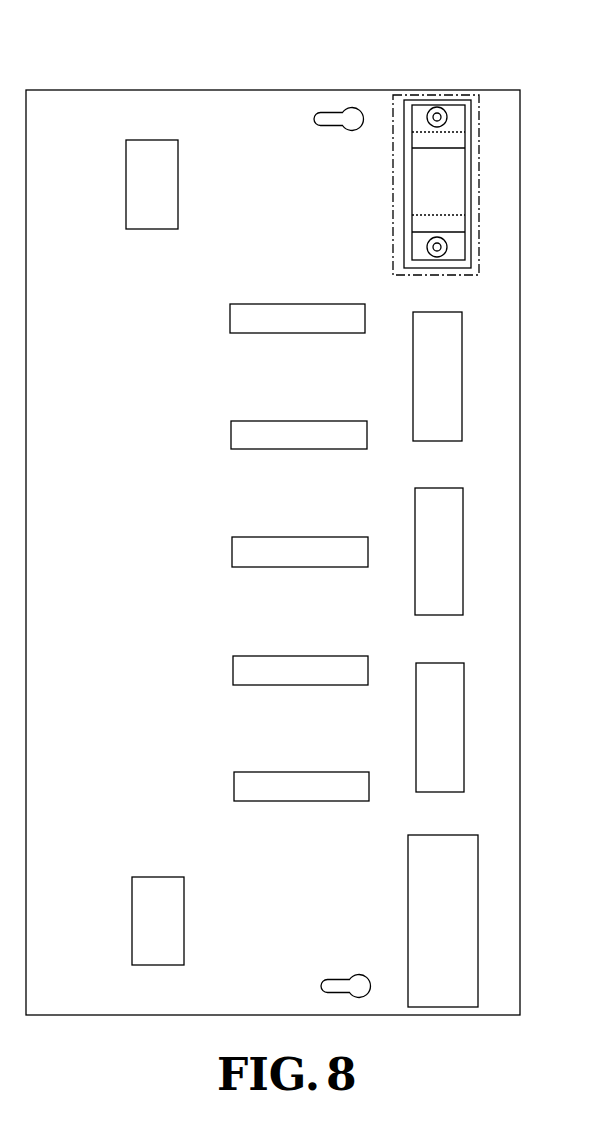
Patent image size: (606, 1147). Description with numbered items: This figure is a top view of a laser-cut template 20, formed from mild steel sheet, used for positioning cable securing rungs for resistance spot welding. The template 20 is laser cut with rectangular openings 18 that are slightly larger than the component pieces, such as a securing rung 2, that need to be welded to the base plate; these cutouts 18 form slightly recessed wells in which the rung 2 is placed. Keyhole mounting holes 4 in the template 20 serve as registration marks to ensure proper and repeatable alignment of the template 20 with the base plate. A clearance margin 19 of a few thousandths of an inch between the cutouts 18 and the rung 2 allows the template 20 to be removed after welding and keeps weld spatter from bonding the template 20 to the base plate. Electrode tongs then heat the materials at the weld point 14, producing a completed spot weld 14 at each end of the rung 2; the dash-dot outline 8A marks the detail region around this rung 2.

The template 20 is at (291, 88).
The cable management rung 2 is at (431, 173).
The spot weld 14 is at (449, 108).
The clearance margin 19 is at (468, 250).
The rectangular opening 18 is at (464, 720).
The keyhole mounting hole 4 is at (369, 992).
The detail region FIG. 8A is at (483, 115).